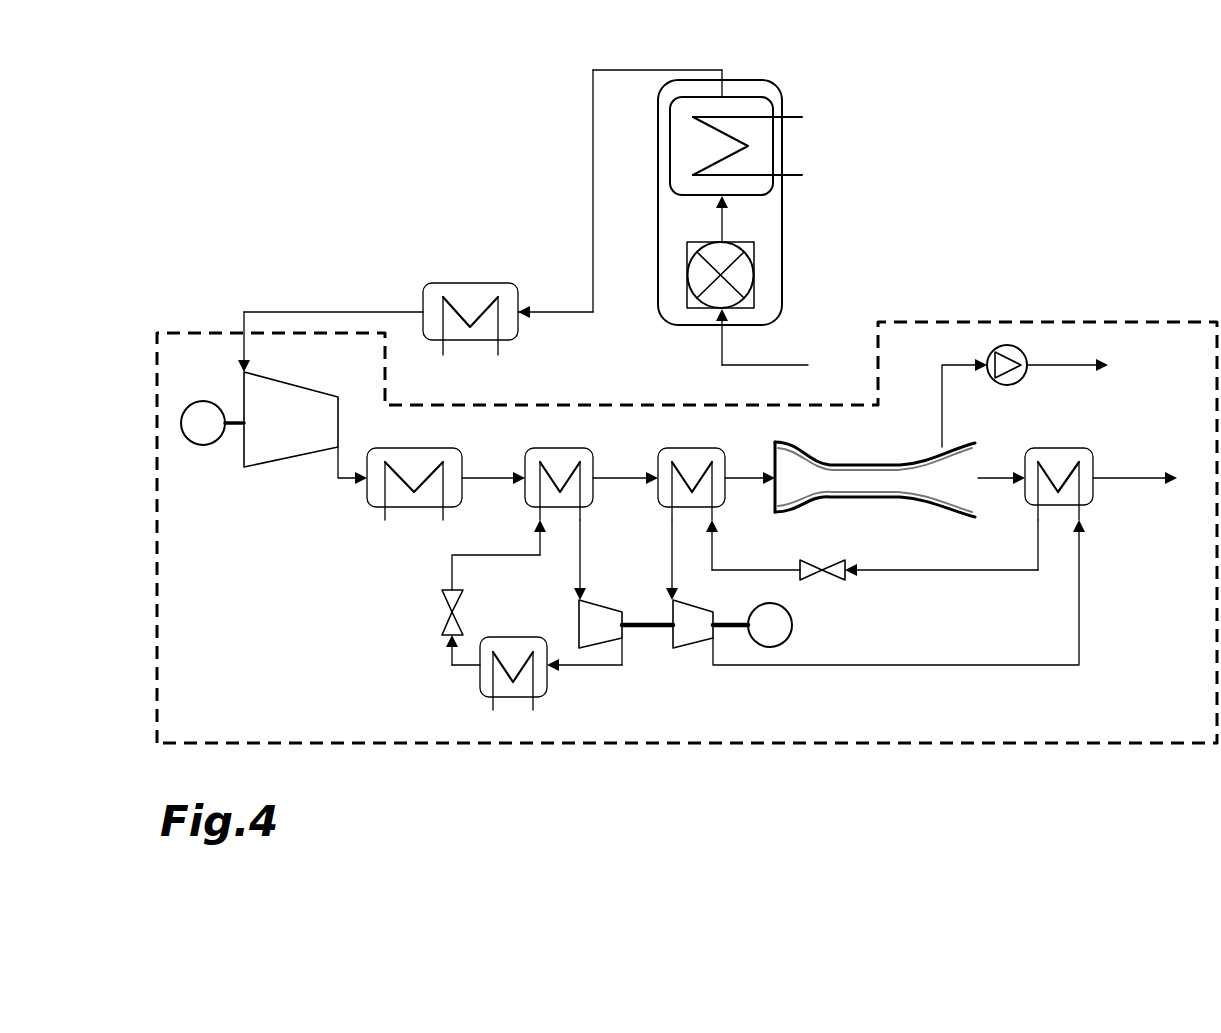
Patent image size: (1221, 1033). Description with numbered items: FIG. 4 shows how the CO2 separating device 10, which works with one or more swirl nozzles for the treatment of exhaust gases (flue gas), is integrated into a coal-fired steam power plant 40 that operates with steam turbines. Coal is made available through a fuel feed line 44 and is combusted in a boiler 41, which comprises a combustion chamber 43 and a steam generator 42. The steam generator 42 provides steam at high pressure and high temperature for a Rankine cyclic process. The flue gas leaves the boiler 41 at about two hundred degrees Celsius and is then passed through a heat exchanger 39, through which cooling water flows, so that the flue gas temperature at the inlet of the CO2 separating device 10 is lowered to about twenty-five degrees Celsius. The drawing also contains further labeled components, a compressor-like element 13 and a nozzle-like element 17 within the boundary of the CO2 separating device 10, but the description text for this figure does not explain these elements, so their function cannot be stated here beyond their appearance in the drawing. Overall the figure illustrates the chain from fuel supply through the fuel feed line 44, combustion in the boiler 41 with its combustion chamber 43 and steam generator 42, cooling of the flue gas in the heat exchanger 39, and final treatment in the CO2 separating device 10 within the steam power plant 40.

The CO2 separating device 10 is at (1155, 743).
The compressor 13 is at (310, 439).
The combustion chamber / nozzle 17 is at (890, 477).
The heat exchanger 39 is at (468, 281).
The coal-fired steam power plant 40 is at (1064, 249).
The boiler 41 is at (686, 182).
The steam generator 42 is at (750, 107).
The combustion chamber 43 is at (743, 270).
The fuel feed line 44 is at (782, 364).